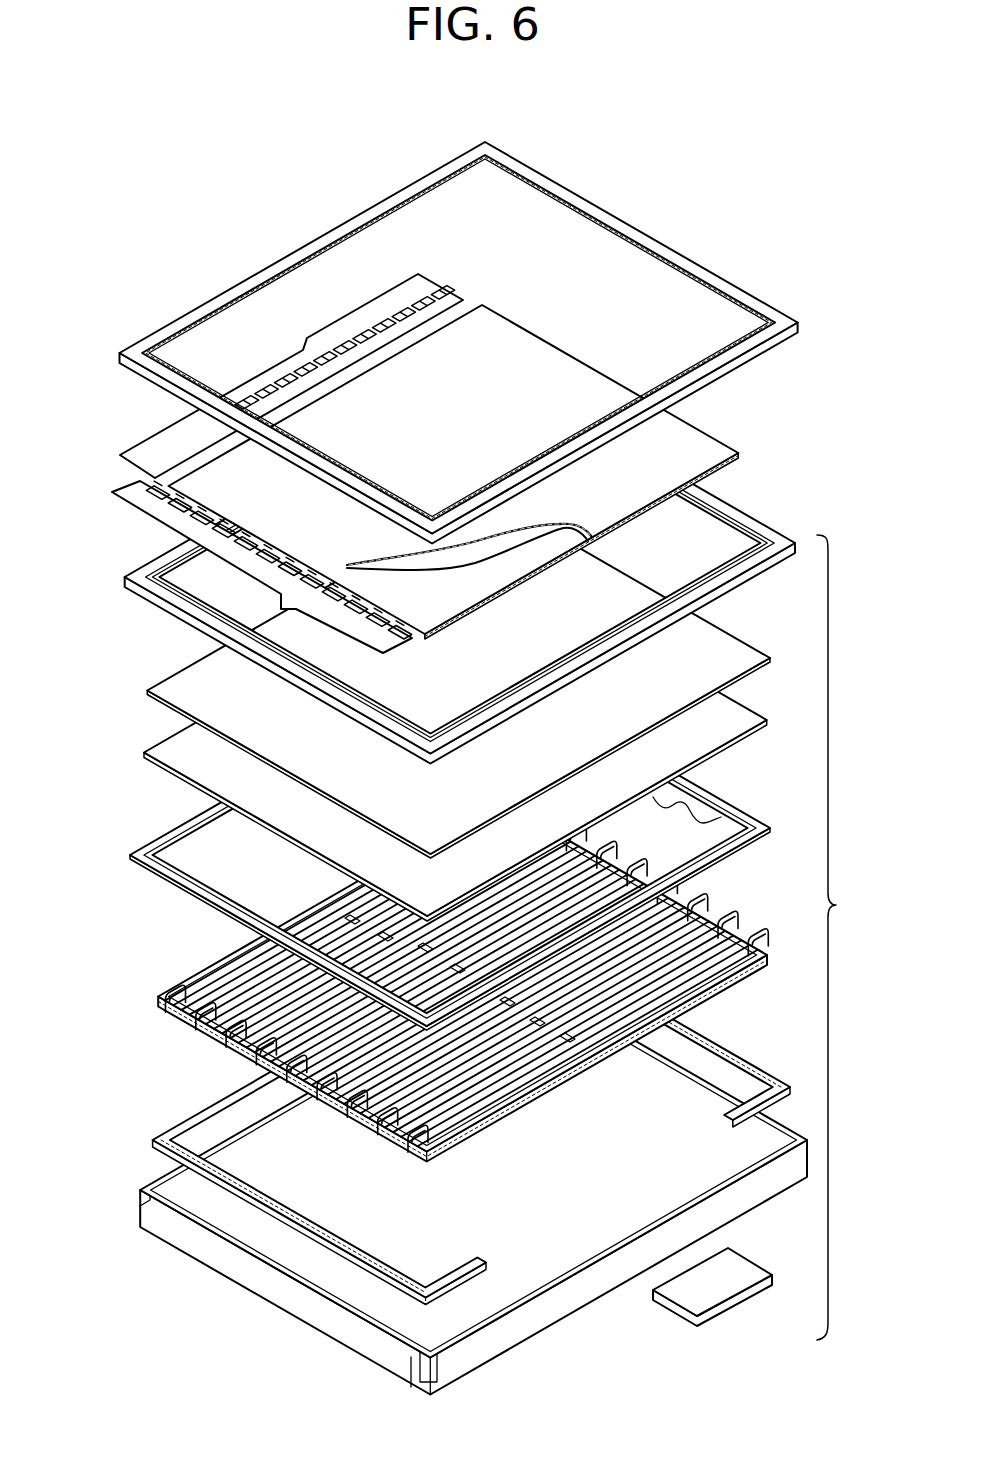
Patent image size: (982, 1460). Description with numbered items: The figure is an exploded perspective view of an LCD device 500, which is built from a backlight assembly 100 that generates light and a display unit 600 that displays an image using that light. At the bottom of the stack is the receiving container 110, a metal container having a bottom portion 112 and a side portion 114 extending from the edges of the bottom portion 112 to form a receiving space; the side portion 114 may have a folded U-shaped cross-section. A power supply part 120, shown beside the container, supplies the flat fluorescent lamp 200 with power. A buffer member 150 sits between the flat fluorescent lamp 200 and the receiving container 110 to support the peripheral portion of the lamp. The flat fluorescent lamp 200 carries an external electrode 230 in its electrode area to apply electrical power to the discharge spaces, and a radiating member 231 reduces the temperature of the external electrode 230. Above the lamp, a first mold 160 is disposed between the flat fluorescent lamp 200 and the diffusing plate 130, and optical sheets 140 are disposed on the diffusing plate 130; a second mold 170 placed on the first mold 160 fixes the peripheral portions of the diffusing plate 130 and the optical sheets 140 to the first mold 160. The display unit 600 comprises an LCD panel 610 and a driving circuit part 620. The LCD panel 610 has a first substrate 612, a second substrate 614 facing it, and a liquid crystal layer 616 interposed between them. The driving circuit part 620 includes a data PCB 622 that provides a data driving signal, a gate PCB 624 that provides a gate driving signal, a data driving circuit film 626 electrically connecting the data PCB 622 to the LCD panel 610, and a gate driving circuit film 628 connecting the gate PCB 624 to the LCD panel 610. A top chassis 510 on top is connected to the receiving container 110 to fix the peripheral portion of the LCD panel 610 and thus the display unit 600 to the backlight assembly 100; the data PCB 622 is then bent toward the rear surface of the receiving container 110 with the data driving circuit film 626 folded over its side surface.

The backlight assembly 100 is at (845, 937).
The receiving container 110 is at (437, 1184).
The bottom portion 112 is at (255, 1222).
The side portion 114 is at (287, 1268).
The power supply part 120 is at (718, 1294).
The diffusing plate 130 is at (150, 729).
The optical sheets 140 is at (170, 663).
The buffer member 150 is at (153, 1092).
The first mold 160 is at (133, 848).
The second mold 170 is at (152, 628).
The flat fluorescent lamp 200 is at (435, 981).
The external electrode 230 is at (758, 973).
The radiating member 231 is at (745, 938).
The LCD device 500 is at (443, 343).
The top chassis 510 is at (176, 300).
The display unit 600 is at (397, 454).
The LCD panel 610 is at (454, 474).
The first substrate 612 is at (466, 598).
The second substrate 614 is at (580, 508).
The liquid crystal layer 616 is at (467, 569).
The driving circuit part 620 is at (260, 454).
The data printed circuit board 622 is at (323, 336).
The gate printed circuit board 624 is at (150, 505).
The data driving circuit film 626 is at (380, 332).
The gate driving circuit film 628 is at (182, 534).